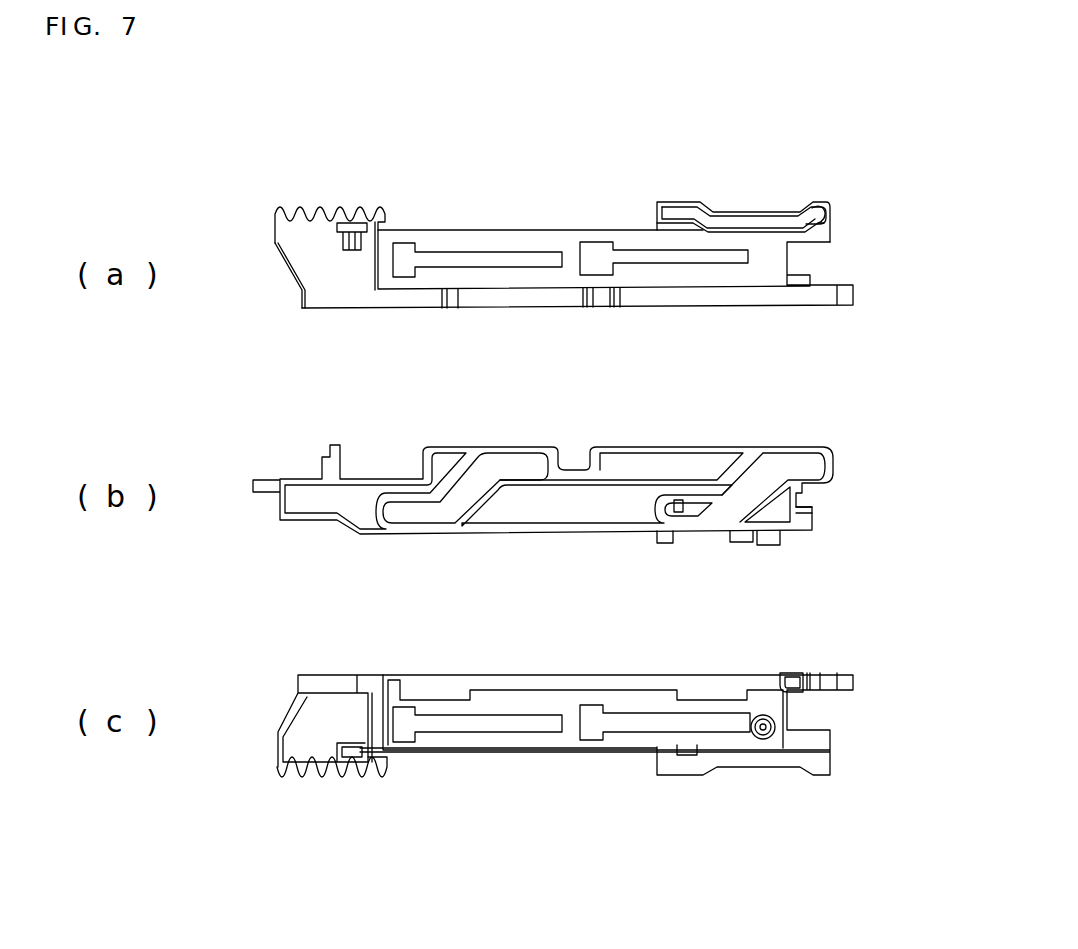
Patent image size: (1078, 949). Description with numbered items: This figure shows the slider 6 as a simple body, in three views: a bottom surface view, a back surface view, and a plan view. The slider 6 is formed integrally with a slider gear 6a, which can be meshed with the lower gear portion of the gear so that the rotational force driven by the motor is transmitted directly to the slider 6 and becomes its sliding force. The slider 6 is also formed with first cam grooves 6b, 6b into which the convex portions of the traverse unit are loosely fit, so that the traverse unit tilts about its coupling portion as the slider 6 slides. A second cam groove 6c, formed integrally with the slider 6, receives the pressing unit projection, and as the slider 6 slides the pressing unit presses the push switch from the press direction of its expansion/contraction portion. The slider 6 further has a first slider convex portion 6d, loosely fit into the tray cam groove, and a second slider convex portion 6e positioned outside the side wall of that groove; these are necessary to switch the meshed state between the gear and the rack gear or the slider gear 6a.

The slider 6 is at (462, 211).
The slider gear 6a is at (313, 777).
The first cam grooves 6b is at (500, 470).
The second cam groove 6c is at (763, 222).
The first slider convex portion 6d is at (764, 738).
The second slider convex portion 6e is at (790, 670).